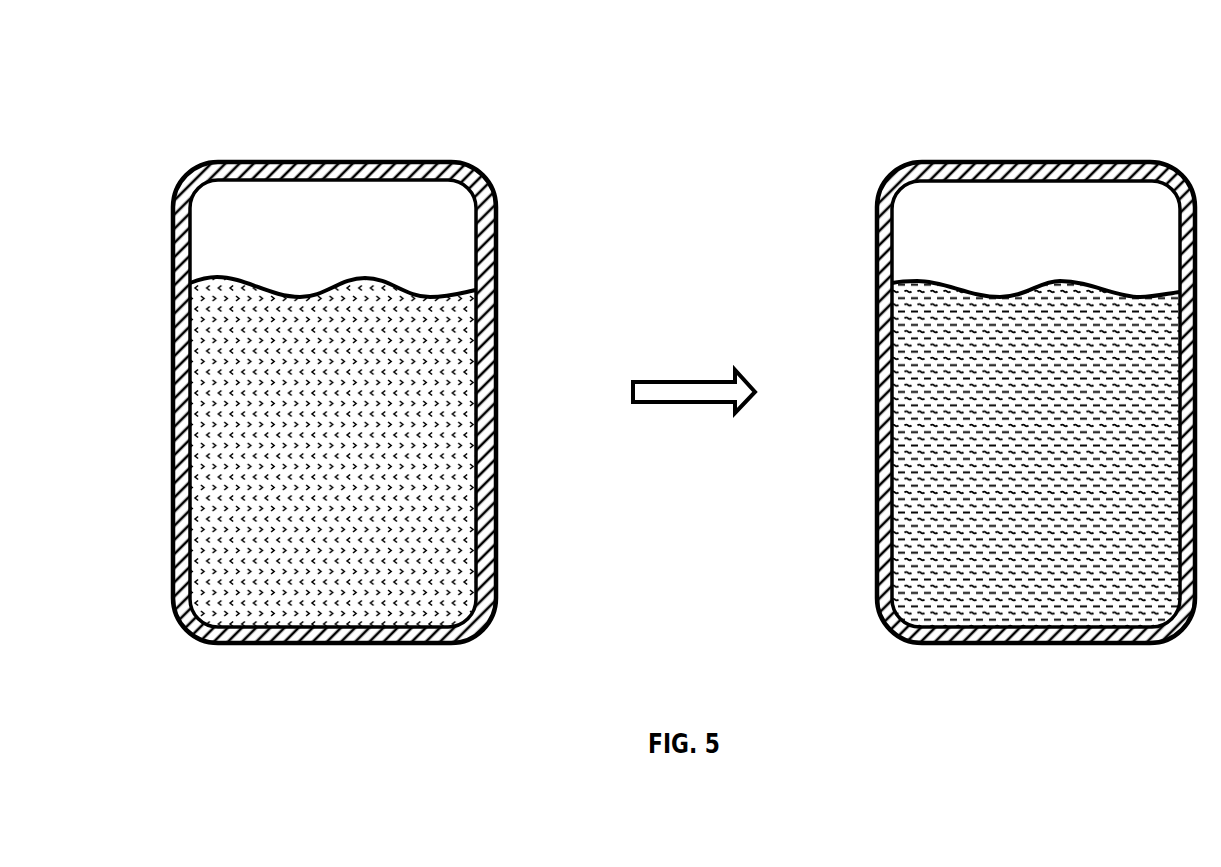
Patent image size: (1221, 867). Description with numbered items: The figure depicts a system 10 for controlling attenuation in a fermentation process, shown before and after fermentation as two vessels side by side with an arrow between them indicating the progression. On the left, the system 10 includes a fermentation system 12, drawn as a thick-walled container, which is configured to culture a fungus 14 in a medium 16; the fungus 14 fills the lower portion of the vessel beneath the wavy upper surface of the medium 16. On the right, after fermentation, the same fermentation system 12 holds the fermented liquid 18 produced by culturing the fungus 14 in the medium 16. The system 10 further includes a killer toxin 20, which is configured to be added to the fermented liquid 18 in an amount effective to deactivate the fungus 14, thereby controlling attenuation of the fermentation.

The system 10 is at (407, 338).
The fermentation system 12 is at (372, 160).
The fungus 14 is at (357, 505).
The medium 16 is at (382, 275).
The fermented liquid 18 is at (967, 287).
The killer toxin 20 is at (943, 423).